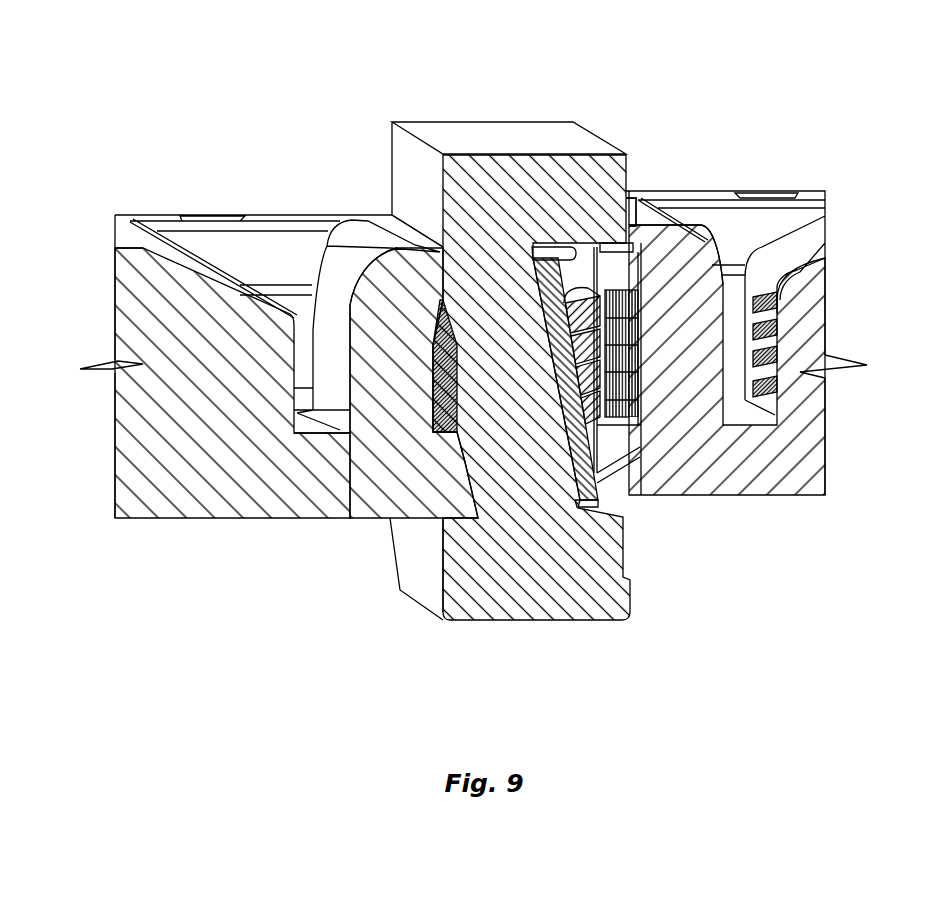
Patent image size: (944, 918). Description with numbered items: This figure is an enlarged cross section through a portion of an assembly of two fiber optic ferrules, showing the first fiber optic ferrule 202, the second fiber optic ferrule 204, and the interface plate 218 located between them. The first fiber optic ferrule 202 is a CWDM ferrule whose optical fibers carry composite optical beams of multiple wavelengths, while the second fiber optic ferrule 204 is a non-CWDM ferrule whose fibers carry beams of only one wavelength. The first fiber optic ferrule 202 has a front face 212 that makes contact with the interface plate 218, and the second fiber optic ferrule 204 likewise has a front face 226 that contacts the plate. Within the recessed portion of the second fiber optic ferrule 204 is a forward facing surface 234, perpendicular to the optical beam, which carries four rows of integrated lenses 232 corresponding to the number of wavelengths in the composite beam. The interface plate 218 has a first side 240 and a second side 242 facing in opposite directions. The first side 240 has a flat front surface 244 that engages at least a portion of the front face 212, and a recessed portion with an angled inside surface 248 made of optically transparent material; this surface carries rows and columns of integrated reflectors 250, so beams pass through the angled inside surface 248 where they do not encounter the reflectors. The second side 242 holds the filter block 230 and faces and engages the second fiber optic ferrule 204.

The first fiber optic ferrule 202 is at (200, 522).
The second fiber optic ferrule 204 is at (826, 448).
The front face 212 is at (441, 298).
The interface plate 218 is at (522, 118).
The front face 226 is at (620, 258).
The filter block 230 is at (598, 492).
The integrated lenses 232 is at (605, 362).
The forward facing surface 234 is at (648, 300).
The first side 240 is at (366, 537).
The second side 242 is at (672, 563).
The flat front surface 244 is at (432, 592).
The angled inside surface 248 is at (487, 520).
The integrated reflectors 250 is at (440, 405).